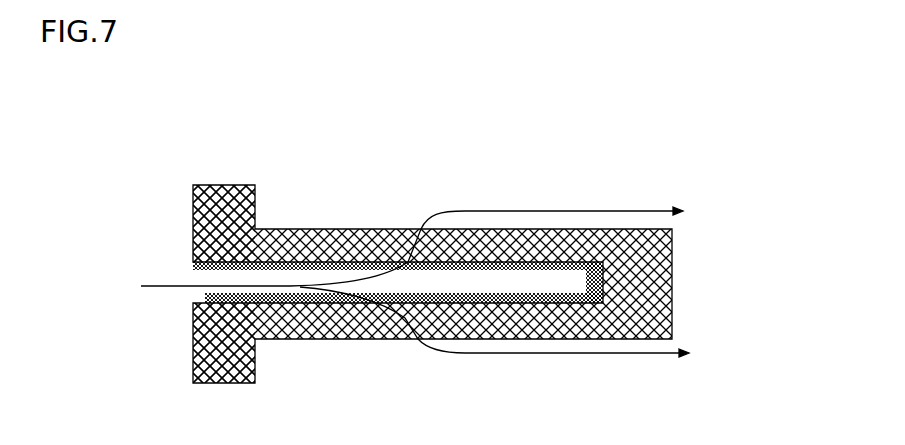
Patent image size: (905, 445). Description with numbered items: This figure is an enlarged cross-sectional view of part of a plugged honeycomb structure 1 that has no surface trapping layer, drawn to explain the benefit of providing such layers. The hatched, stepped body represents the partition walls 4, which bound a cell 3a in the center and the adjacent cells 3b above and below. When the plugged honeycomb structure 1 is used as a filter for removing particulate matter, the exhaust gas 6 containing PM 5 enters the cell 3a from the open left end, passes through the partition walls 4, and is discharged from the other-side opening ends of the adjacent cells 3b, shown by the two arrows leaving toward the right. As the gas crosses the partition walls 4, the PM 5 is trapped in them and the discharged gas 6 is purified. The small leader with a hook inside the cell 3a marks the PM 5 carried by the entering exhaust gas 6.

The plugged honeycomb structure 1 is at (655, 173).
The cell 3a is at (548, 280).
The adjacent cell 3b is at (338, 180).
The partition wall 4 is at (378, 228).
The PM 5 is at (445, 272).
The exhaust gas 6 is at (150, 283).